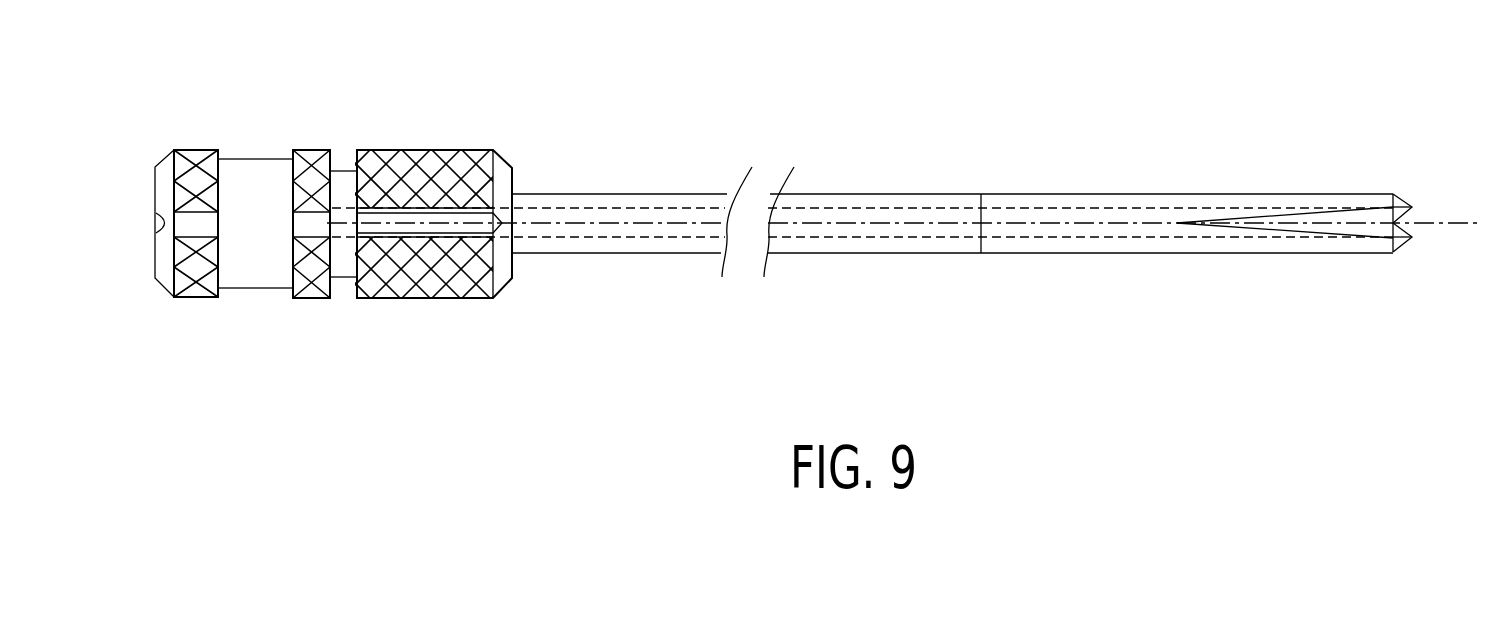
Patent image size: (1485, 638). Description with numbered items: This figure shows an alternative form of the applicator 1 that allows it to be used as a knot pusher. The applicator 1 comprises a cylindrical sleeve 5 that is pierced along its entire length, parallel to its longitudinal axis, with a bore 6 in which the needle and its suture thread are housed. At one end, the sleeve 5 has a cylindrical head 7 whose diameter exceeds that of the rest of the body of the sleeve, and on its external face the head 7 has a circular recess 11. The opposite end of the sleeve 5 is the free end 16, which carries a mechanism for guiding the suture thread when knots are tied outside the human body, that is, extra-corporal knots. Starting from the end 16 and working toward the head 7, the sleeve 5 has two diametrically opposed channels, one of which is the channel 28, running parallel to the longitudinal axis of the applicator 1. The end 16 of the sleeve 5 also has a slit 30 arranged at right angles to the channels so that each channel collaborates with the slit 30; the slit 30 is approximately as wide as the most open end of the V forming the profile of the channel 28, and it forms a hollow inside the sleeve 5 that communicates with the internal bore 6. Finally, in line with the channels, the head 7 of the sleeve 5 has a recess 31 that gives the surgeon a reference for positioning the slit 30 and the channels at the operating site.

The applicator 1 is at (1218, 94).
The cylindrical sleeve 5 is at (921, 238).
The bore 6 is at (848, 208).
The cylindrical head 7 is at (418, 173).
The circular recess 11 is at (248, 175).
The free end 16 is at (1395, 196).
The channel 28 is at (1357, 228).
The slit 30 is at (1401, 226).
The recess 31 is at (420, 223).